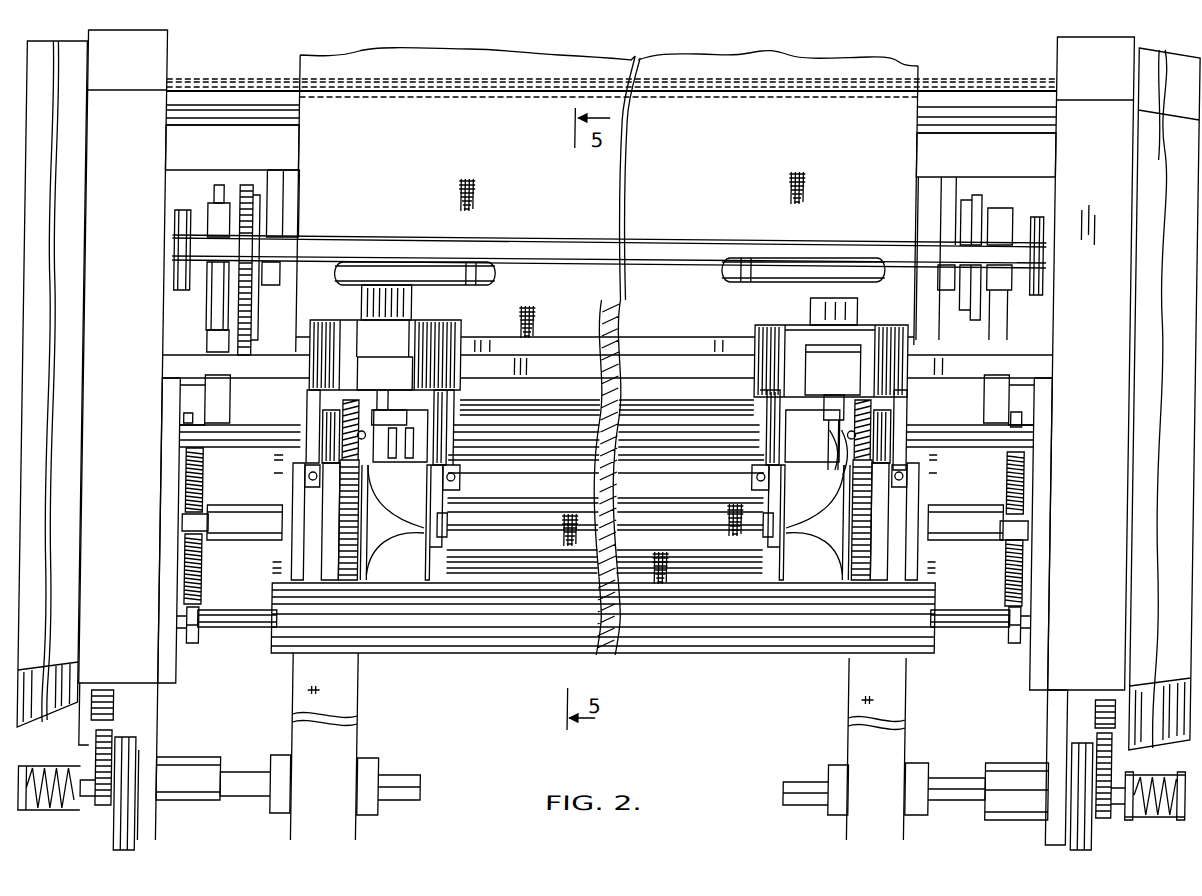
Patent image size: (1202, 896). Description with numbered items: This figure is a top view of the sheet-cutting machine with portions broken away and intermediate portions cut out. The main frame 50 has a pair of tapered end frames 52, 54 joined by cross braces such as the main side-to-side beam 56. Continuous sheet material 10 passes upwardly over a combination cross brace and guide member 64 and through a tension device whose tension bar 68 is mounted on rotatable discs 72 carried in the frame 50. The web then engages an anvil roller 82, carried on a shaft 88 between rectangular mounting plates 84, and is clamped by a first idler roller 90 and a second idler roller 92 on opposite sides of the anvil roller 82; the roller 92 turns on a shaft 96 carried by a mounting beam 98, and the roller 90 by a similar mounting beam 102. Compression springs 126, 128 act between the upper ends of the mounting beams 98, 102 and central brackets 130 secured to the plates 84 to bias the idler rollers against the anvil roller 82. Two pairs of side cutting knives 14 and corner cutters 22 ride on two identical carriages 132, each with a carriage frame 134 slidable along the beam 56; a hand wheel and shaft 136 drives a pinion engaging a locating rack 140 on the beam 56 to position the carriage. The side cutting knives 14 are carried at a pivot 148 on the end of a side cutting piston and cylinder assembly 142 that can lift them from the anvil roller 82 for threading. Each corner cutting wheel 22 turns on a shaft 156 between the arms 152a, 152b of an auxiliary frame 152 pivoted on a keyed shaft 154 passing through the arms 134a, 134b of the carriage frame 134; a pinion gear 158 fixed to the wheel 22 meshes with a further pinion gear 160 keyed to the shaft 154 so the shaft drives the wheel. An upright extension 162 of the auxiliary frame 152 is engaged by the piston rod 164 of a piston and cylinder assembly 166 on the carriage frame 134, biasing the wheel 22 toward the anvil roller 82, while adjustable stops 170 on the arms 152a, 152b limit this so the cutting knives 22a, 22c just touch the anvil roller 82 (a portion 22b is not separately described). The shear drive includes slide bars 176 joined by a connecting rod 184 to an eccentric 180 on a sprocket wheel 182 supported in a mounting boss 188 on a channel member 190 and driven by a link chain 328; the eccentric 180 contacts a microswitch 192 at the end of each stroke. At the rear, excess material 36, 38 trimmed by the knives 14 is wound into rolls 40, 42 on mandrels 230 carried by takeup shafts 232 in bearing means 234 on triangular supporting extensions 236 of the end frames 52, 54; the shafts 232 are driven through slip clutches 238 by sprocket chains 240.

The sheet material 10 is at (912, 70).
The side cutting knives 14 is at (852, 447).
The corner cutting wheel 22 is at (422, 566).
The cutting knife 22a is at (386, 512).
The web portion 22b is at (440, 541).
The cutting knife 22c is at (398, 578).
The excess material 36 is at (369, 699).
The excess material 38 is at (862, 744).
The roll 40 is at (370, 737).
The roll 42 is at (856, 752).
The main frame 50 is at (173, 55).
The tapered end frame 52 is at (118, 74).
The tapered end frame 54 is at (1099, 165).
The cross brace 56 is at (582, 362).
The combination cross brace and guide member 64 is at (248, 86).
The tension bar 68 is at (302, 246).
The rotatable disc 72 is at (179, 218).
The anvil roller 82 is at (282, 573).
The rectangular mounting plate 84 is at (1034, 694).
The shaft 88 is at (230, 525).
The first idler roller 90 is at (640, 408).
The second idler roller 92 is at (699, 656).
The shaft 96 is at (240, 630).
The mounting beam 98 is at (196, 630).
The mounting beam 102 is at (190, 418).
The compression spring 126 is at (193, 574).
The compression spring 128 is at (193, 482).
The central bracket 130 is at (190, 525).
The carriage 132 is at (406, 256).
The carriage frame 134 is at (462, 347).
The arm of carriage frame 134a is at (462, 410).
The arm of carriage frame 134b is at (316, 412).
The hand wheel and shaft 136 is at (484, 274).
The locating rack 140 is at (527, 345).
The side cutting piston and cylinder assembly 142 is at (860, 326).
The pivot 148 is at (842, 395).
The auxiliary frame 152 is at (440, 450).
The arm of auxiliary frame 152a is at (454, 546).
The arm of auxiliary frame 152b is at (338, 582).
The keyed shaft 154 is at (555, 430).
The shaft 156 is at (342, 527).
The pinion gear 158 is at (352, 582).
The pinion gear 160 is at (352, 395).
The upright extension 162 is at (410, 415).
The piston rod 164 is at (393, 392).
The piston and cylinder assembly 166 is at (366, 301).
The adjustable stop 170 is at (314, 474).
The slide bar 176 is at (184, 395).
The eccentric 180 is at (211, 212).
The sprocket wheel 182 is at (247, 185).
The connecting rod 184 is at (210, 345).
The mounting boss 188 is at (285, 182).
The channel member 190 is at (170, 162).
The microswitch 192 is at (217, 185).
The mandrel 230 is at (290, 758).
The takeup shaft 232 is at (418, 783).
The bearing means 234 is at (205, 760).
The triangular supporting extension 236 is at (160, 713).
The slip clutch 238 is at (122, 822).
The sprocket chain 240 is at (100, 758).
The link chain 328 is at (258, 338).